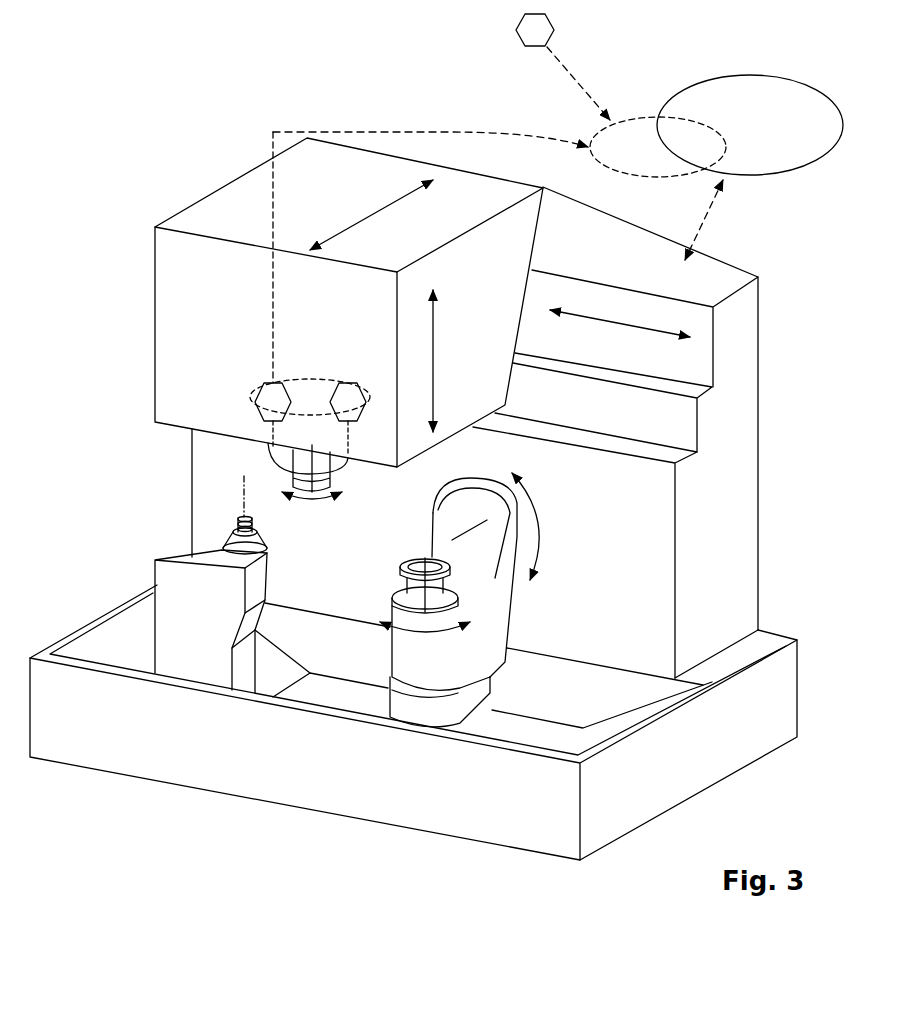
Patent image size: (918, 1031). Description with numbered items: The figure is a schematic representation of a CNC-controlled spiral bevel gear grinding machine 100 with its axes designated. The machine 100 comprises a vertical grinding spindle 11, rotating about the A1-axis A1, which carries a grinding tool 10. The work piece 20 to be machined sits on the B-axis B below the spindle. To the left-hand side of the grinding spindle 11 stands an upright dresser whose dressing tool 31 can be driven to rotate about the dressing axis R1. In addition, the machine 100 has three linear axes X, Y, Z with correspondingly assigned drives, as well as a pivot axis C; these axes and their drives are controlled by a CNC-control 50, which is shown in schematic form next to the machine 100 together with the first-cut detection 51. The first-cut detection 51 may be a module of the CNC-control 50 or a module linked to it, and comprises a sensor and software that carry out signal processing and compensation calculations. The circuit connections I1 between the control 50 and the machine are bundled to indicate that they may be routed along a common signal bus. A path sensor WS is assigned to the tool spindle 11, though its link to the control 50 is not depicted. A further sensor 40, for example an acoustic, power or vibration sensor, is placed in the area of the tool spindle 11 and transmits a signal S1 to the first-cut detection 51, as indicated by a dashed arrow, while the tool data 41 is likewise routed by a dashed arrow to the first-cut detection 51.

The grinding machine 100 is at (140, 111).
The grinding tool 10 is at (293, 478).
The grinding spindle 11 is at (267, 448).
The work piece 20 is at (445, 575).
The dressing tool 31 is at (240, 523).
The sensor 40 is at (263, 411).
The path sensor WS is at (310, 417).
The tool data 41 is at (525, 39).
The CNC-control 50 is at (764, 135).
The first-cut detection 51 is at (647, 153).
The signal S1 is at (430, 130).
The circuit connection I1 is at (715, 220).
The dressing axis R1 is at (240, 488).
The A1-axis A1 is at (312, 515).
The B-axis B is at (425, 645).
The pivot axis C is at (541, 526).
The linear axis X is at (447, 361).
The linear axis Y is at (620, 335).
The linear axis Z is at (371, 215).